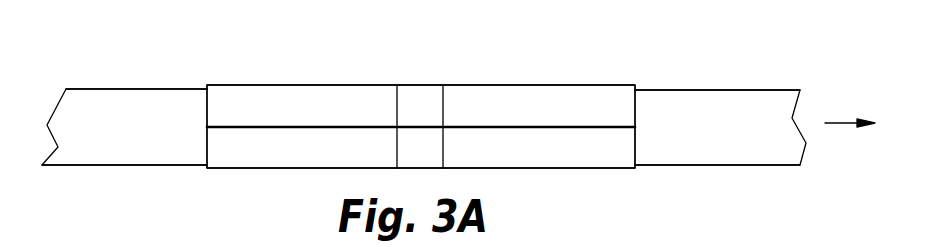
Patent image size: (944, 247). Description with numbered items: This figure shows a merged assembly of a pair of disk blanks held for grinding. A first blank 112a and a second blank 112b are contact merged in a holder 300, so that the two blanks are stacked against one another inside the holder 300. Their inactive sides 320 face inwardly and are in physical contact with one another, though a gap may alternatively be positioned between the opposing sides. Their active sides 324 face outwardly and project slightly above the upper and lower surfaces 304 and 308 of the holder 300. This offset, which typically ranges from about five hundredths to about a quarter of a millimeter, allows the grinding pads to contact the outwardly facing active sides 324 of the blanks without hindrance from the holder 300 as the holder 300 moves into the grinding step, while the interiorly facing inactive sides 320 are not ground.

The holder 300 is at (108, 147).
The upper surface of the holder 304 is at (167, 89).
The lower surface of the holder 308 is at (168, 167).
The first blank 112a is at (272, 105).
The second blank 112b is at (310, 157).
The inactive sides 320 is at (350, 127).
The active sides 324 is at (562, 85).